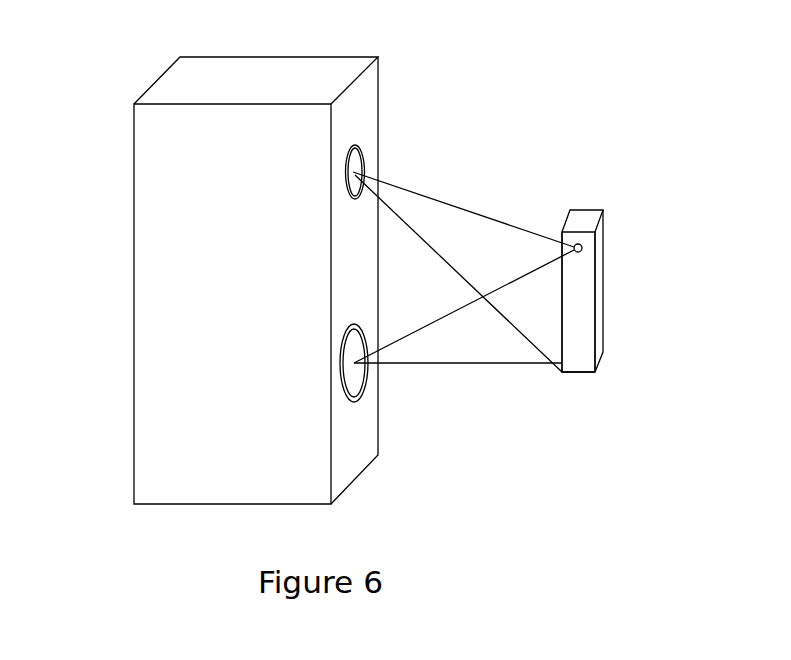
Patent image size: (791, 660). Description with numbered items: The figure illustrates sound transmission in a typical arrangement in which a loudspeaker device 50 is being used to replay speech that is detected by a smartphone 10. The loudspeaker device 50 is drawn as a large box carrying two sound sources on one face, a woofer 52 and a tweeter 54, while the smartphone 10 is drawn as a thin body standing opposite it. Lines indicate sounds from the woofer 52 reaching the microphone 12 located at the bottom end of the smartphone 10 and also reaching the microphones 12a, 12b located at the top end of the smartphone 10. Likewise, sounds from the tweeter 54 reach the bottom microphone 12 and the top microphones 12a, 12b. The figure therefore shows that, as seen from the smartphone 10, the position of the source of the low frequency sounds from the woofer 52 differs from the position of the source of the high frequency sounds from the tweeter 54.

The loudspeaker device 50 is at (134, 163).
The tweeter 54 is at (352, 166).
The woofer 52 is at (355, 373).
The smartphone 10 is at (598, 314).
The microphone 12 is at (562, 367).
The microphone 12a is at (603, 242).
The microphone 12b is at (576, 245).